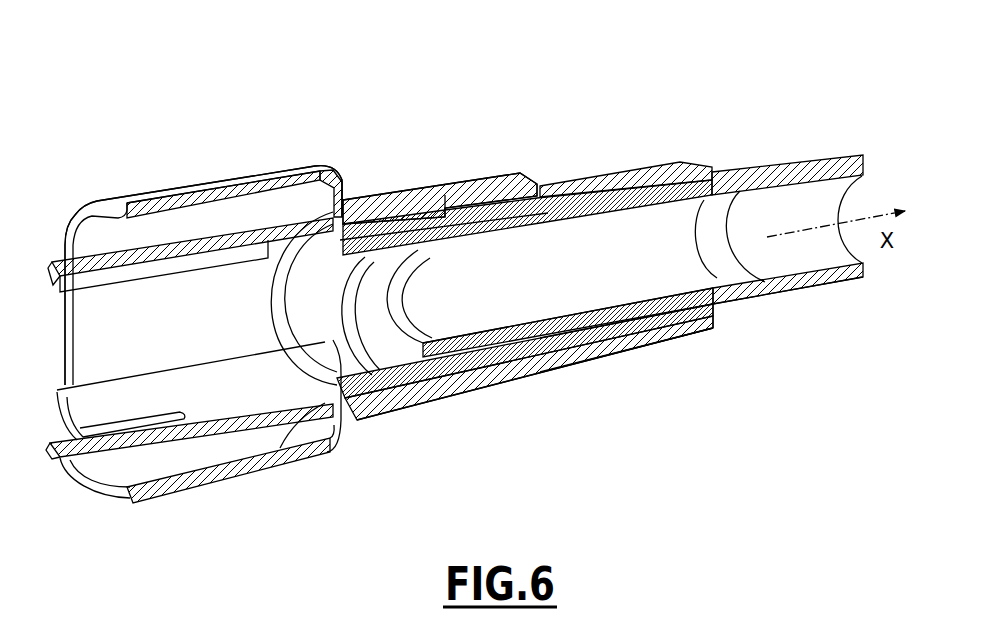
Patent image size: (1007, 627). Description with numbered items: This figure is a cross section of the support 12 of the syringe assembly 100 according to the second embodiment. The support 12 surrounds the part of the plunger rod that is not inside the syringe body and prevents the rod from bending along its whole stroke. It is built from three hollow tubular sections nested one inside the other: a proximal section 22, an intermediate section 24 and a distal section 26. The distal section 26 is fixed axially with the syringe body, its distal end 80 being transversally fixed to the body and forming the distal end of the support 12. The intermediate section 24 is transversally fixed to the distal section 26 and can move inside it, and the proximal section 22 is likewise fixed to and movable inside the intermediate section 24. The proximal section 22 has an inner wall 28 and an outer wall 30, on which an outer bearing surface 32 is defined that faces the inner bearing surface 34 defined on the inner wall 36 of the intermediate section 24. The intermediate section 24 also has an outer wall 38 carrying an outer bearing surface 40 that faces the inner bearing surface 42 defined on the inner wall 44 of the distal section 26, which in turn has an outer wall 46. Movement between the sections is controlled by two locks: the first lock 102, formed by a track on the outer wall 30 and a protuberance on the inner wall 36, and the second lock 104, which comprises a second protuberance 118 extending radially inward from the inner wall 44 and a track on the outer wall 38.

The syringe assembly 100 is at (100, 143).
The support 12 is at (523, 103).
The proximal section 22 is at (793, 152).
The intermediate section 24 is at (443, 194).
The distal section 26 is at (190, 150).
The inner wall 28 is at (673, 333).
The outer wall 30 is at (729, 162).
The outer bearing surface 32 is at (634, 337).
The inner bearing surface 34 is at (573, 320).
The inner wall 36 is at (363, 260).
The outer wall 38 is at (572, 152).
The outer bearing surface 40 is at (340, 400).
The inner bearing surface 42 is at (298, 398).
The inner wall 44 is at (200, 395).
The outer wall 46 is at (283, 165).
The distal end 80 is at (118, 505).
The first lock 102 is at (580, 362).
The second lock 104 is at (417, 423).
The second protuberance 118 is at (506, 390).